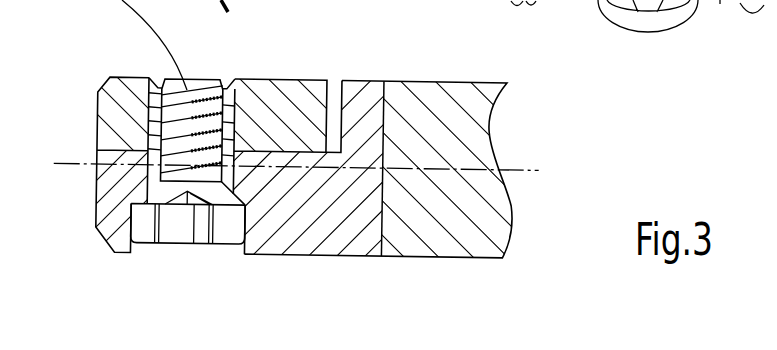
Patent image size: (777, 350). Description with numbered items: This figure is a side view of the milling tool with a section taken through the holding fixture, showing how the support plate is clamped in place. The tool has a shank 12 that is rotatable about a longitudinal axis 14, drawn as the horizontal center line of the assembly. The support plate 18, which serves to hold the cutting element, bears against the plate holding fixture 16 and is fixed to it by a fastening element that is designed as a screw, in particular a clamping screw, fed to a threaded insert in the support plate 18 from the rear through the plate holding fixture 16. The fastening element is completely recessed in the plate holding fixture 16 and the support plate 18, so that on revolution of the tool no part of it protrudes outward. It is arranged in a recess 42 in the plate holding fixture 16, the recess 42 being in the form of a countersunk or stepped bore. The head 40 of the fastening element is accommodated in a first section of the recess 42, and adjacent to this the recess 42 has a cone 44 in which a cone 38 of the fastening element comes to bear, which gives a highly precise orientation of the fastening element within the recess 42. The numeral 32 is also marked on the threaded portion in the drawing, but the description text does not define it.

The shank 12 is at (467, 134).
The longitudinal axis 14 is at (527, 176).
The plate holding fixture 16 is at (348, 226).
The support plate 18 is at (275, 97).
The adjusting screw 32 is at (208, 87).
The cone of the fastening element 38 is at (145, 192).
The head 40 is at (215, 208).
The recess 42 is at (226, 230).
The cone of the recess 44 is at (149, 208).